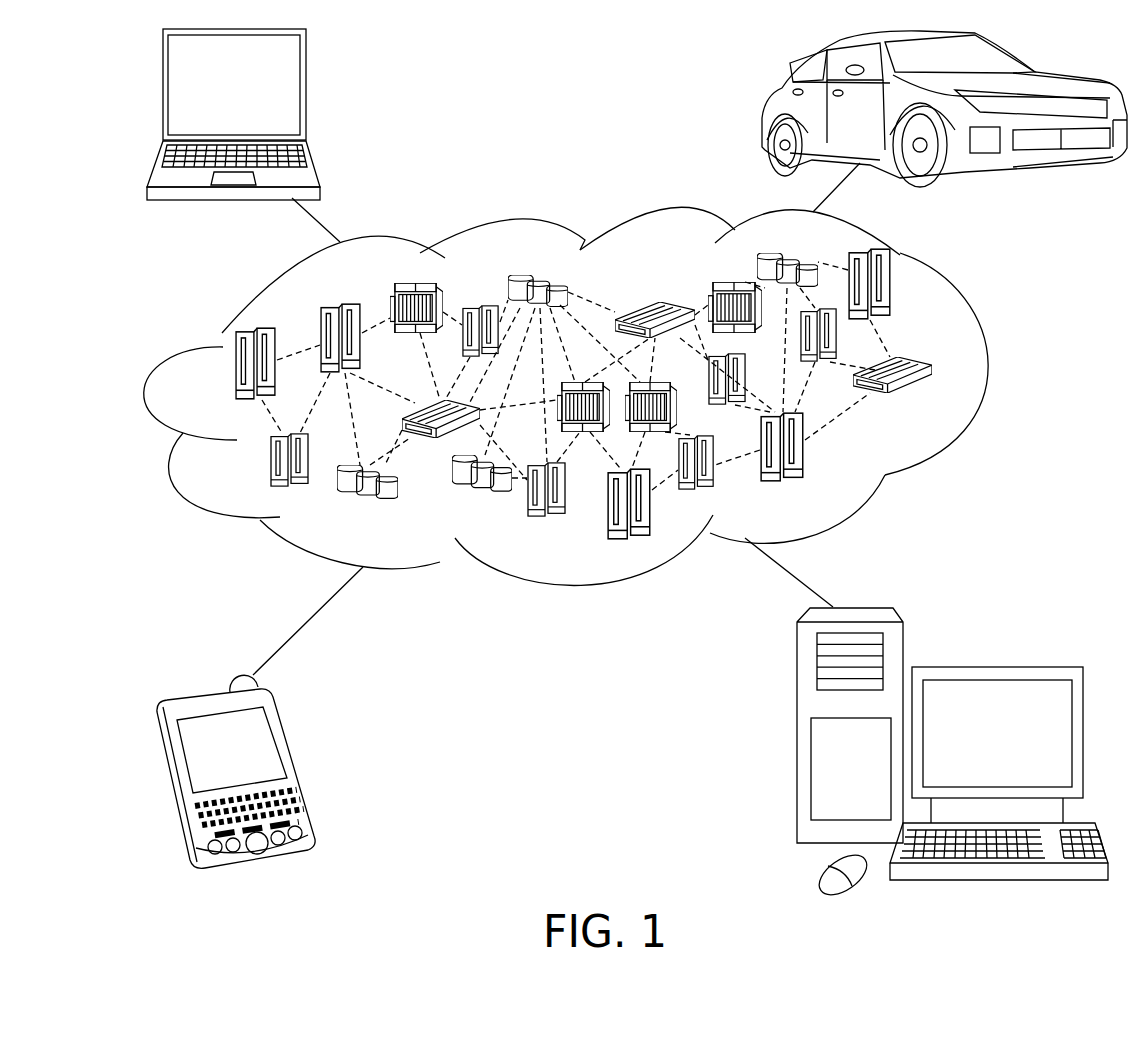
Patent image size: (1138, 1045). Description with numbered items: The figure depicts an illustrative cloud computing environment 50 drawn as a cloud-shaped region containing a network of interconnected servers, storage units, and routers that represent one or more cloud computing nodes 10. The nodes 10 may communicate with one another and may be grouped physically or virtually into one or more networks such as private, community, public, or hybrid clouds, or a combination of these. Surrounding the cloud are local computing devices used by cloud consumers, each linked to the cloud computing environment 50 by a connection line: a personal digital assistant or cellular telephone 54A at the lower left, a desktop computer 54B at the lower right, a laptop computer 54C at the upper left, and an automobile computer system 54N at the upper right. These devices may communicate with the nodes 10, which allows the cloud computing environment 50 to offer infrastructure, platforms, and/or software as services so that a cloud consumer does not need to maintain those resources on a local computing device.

The cloud computing node 10 is at (940, 404).
The cloud computing environment 50 is at (997, 373).
The personal digital assistant or cellular telephone 54A is at (297, 763).
The desktop computer 54B is at (995, 667).
The laptop computer 54C is at (307, 92).
The automobile computer system 54N is at (768, 113).